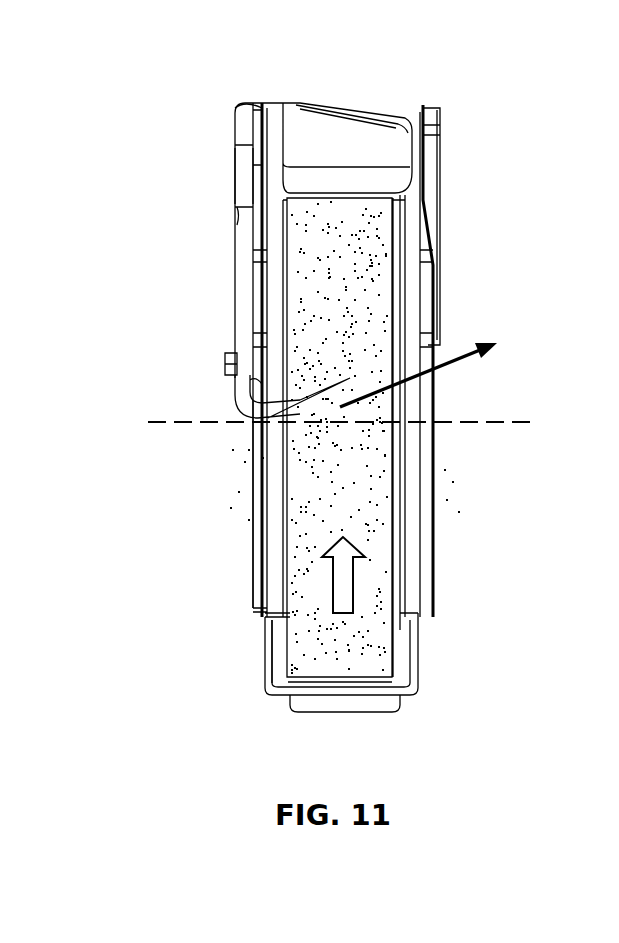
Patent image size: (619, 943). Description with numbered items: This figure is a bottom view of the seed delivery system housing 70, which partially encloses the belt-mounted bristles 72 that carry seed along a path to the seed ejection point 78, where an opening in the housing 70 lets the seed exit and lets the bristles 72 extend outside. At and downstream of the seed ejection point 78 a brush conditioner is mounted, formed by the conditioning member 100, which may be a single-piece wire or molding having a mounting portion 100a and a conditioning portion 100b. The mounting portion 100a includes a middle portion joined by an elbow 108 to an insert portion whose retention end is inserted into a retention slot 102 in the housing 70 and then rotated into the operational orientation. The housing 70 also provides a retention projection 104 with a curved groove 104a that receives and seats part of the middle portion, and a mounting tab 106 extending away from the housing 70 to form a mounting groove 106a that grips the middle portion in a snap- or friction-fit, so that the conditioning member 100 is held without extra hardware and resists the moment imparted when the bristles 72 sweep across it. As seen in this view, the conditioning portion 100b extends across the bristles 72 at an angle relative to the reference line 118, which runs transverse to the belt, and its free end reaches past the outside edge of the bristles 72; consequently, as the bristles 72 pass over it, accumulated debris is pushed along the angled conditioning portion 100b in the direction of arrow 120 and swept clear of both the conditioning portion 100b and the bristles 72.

The housing 70 is at (272, 577).
The bristles 72 is at (373, 637).
The seed ejection point 78 is at (320, 663).
The conditioning member 100 is at (233, 283).
The mounting portion 100a is at (583, 379).
The conditioning portion 100b is at (378, 365).
The retention slot 102 is at (268, 105).
The retention projection 104 is at (240, 178).
The curved groove 104a is at (237, 210).
The mounting tab 106 is at (230, 405).
The mounting groove 106a is at (240, 352).
The elbow 108 is at (237, 105).
The reference line 118 is at (483, 424).
The arrow 120 is at (467, 358).